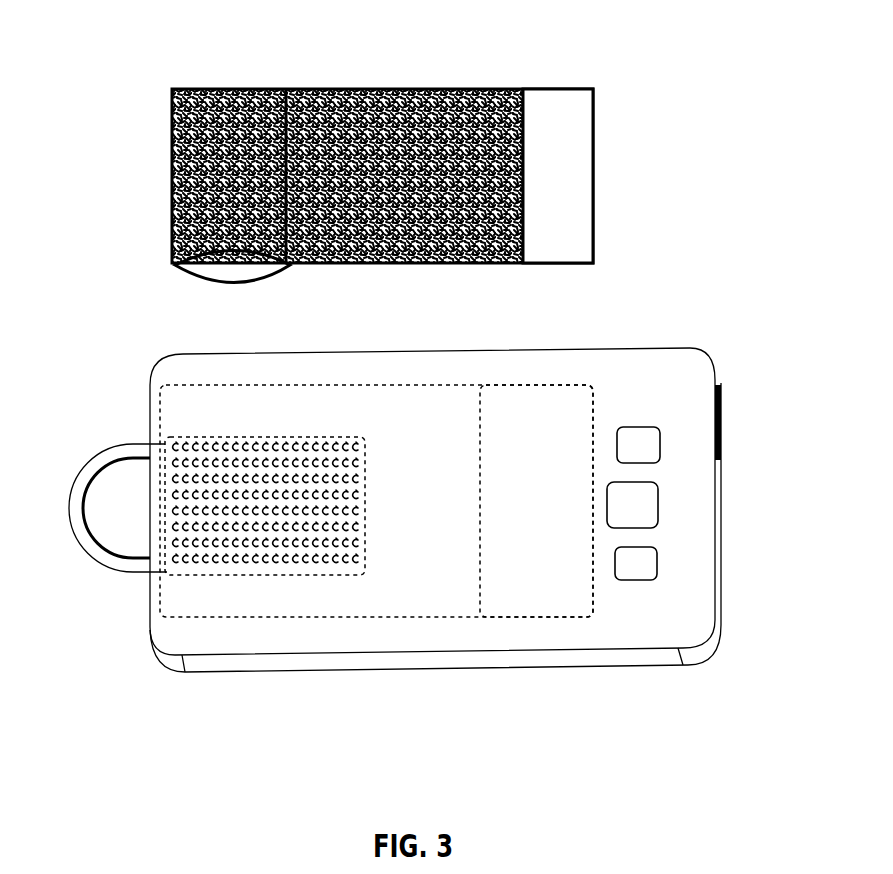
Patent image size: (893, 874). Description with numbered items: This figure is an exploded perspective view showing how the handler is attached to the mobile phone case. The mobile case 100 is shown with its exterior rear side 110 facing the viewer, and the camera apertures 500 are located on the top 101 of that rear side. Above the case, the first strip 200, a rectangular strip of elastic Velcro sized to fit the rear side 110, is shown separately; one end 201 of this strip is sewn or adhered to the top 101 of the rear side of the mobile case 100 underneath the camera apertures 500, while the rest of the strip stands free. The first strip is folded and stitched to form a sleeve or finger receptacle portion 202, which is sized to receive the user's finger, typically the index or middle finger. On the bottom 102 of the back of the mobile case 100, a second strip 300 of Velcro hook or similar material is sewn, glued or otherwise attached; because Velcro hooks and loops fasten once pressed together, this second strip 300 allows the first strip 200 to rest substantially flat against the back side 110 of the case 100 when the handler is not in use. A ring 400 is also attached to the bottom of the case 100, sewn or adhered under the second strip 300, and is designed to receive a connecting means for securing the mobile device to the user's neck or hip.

The mobile case 100 is at (718, 320).
The top of the rear side 101 is at (570, 627).
The bottom of the back of the mobile case 102 is at (212, 608).
The rear side 110 is at (668, 389).
The first strip 200 is at (352, 122).
The end of the first strip 201 is at (571, 163).
The finger receptacle portion 202 is at (171, 190).
The second strip 300 is at (225, 548).
The ring 400 is at (83, 478).
The camera apertures 500 is at (641, 507).